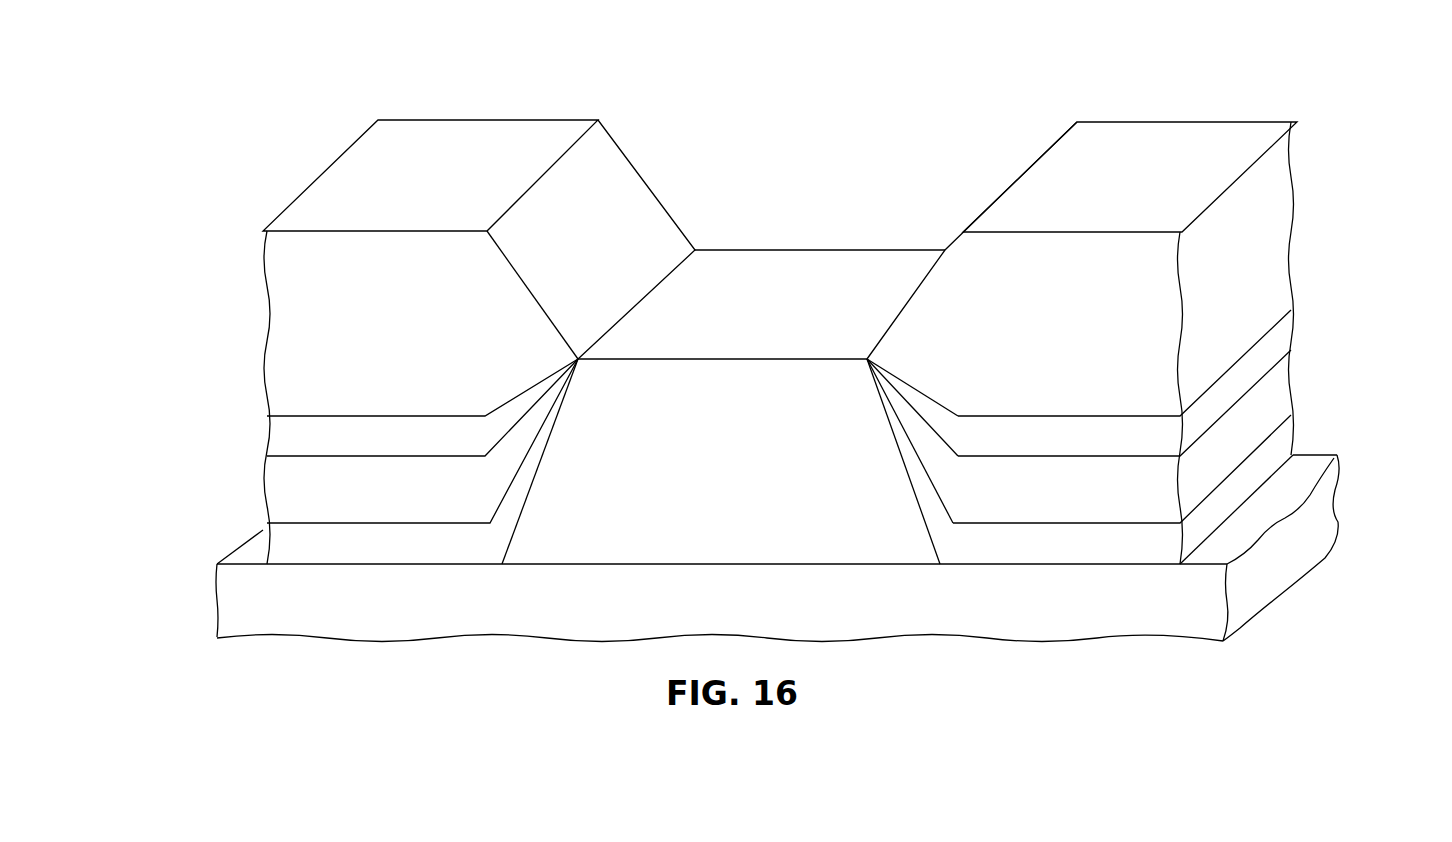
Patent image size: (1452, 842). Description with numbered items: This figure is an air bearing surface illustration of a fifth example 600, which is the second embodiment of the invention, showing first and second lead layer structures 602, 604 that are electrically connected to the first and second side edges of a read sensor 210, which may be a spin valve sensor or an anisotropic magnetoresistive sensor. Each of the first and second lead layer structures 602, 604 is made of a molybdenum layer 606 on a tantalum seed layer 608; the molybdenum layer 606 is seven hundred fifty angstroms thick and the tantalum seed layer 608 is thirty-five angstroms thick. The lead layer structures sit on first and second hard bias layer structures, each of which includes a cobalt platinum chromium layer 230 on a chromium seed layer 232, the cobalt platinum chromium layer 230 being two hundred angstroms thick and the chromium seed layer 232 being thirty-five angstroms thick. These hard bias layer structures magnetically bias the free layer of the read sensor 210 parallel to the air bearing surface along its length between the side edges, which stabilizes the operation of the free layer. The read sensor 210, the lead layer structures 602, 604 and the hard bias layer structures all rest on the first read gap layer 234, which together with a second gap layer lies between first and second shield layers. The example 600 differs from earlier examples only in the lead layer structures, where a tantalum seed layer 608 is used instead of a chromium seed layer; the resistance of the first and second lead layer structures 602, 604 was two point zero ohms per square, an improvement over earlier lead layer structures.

The fifth example 600 is at (874, 108).
The first lead layer structure 602 is at (483, 148).
The second lead layer structure 604 is at (1163, 150).
The read sensor 210 is at (765, 272).
The molybdenum layer 606 is at (270, 316).
The tantalum seed layer 608 is at (272, 437).
The cobalt platinum chromium layer 230 is at (272, 480).
The chromium seed layer 232 is at (272, 546).
The first read gap layer 234 is at (1310, 530).